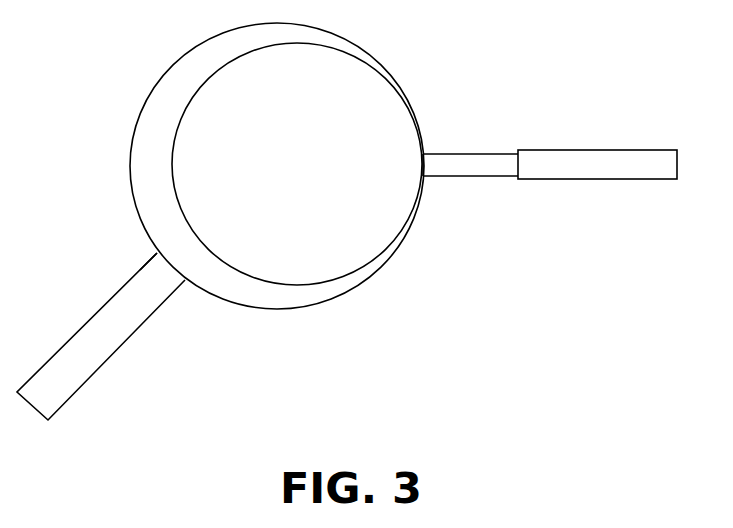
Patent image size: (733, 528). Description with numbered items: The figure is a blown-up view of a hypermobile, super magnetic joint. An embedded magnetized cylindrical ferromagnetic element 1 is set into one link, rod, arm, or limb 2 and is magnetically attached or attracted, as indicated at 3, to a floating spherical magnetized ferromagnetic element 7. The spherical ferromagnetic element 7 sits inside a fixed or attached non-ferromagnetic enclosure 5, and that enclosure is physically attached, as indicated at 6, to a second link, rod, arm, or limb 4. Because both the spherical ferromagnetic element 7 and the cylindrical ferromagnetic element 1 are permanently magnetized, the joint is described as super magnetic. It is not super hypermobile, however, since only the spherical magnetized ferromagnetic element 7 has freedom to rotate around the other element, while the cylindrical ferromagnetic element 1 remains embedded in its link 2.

The cylindrical ferromagnetic element 1 is at (481, 151).
The link 2 is at (577, 196).
The magnetic attachment 3 is at (437, 185).
The link 4 is at (119, 350).
The non-ferromagnetic enclosure 5 is at (151, 68).
The physical attachment 6 is at (147, 247).
The spherical ferromagnetic element 7 is at (334, 147).